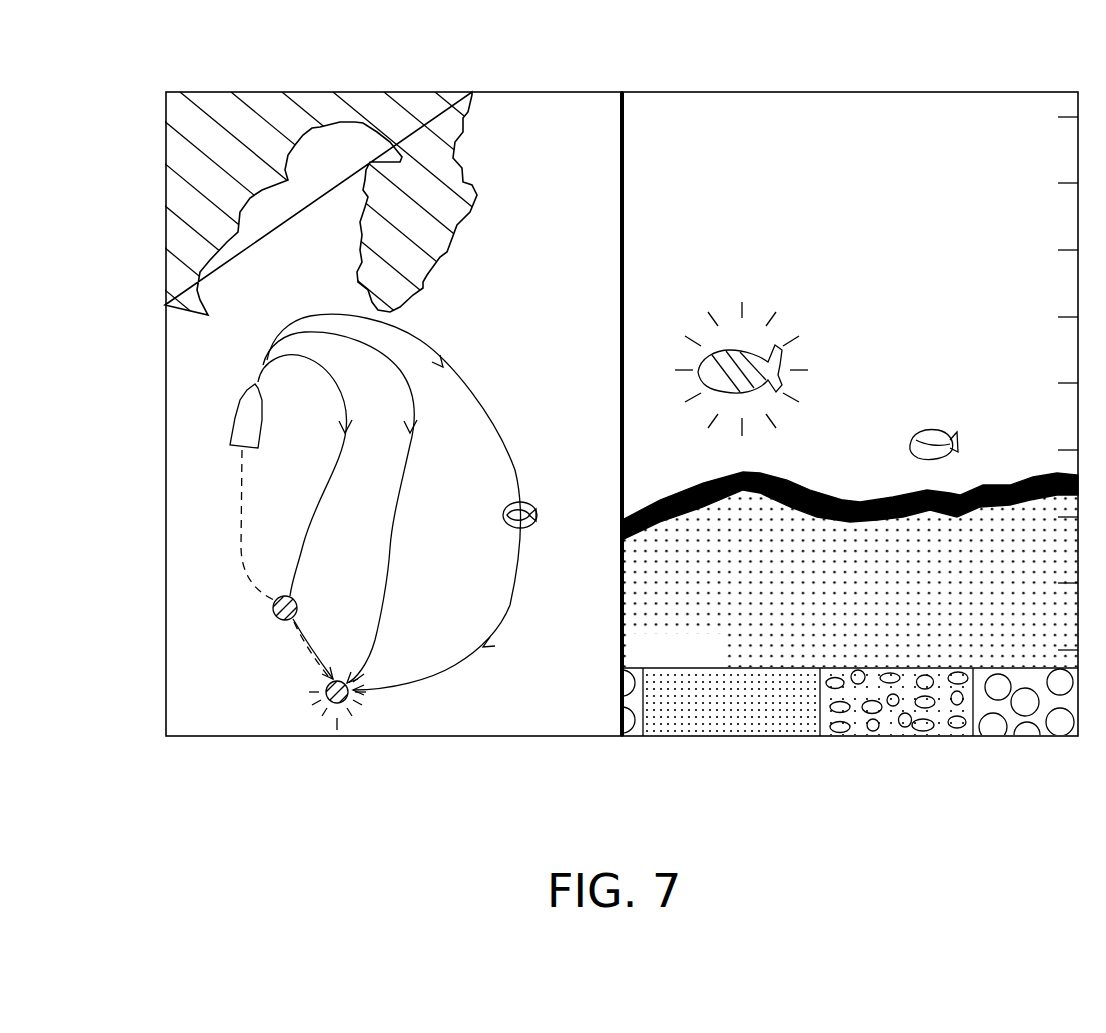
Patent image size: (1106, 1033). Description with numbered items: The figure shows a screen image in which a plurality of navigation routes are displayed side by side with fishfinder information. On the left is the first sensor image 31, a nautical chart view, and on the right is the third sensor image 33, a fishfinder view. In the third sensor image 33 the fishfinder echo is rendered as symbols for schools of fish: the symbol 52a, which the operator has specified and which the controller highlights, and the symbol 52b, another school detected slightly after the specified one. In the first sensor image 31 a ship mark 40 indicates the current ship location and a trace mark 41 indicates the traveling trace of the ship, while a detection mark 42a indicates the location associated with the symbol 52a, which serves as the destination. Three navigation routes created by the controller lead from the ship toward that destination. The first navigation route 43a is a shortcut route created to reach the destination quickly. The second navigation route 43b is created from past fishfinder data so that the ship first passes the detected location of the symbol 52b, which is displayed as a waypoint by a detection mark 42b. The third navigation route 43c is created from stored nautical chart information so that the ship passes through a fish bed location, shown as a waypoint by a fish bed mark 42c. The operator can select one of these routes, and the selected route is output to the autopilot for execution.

The first sensor image 31 is at (197, 753).
The third sensor image 33 is at (783, 755).
The ship mark 40 is at (233, 428).
The trace mark 41 is at (242, 547).
The detection mark 42a is at (343, 703).
The detection mark 42b is at (283, 621).
The fish bed mark 42c is at (533, 500).
The first navigation route 43a is at (383, 583).
The second navigation route 43b is at (320, 505).
The third navigation route 43c is at (510, 610).
The symbol 52a is at (739, 349).
The symbol 52b is at (940, 430).